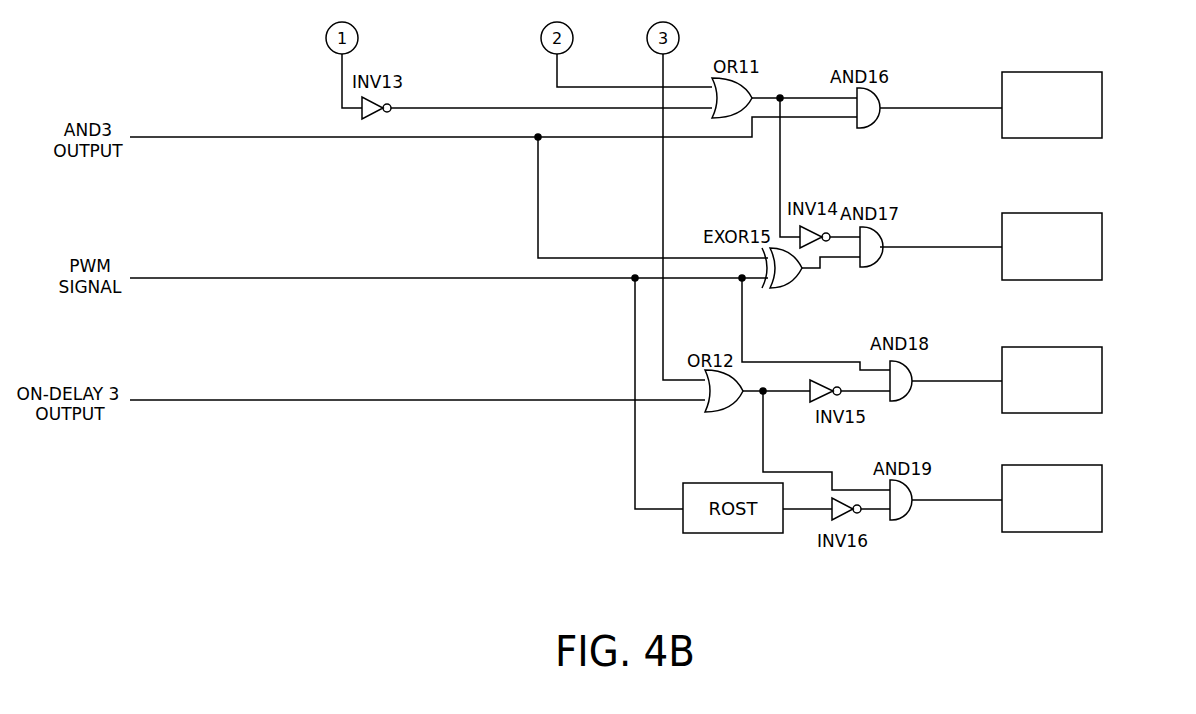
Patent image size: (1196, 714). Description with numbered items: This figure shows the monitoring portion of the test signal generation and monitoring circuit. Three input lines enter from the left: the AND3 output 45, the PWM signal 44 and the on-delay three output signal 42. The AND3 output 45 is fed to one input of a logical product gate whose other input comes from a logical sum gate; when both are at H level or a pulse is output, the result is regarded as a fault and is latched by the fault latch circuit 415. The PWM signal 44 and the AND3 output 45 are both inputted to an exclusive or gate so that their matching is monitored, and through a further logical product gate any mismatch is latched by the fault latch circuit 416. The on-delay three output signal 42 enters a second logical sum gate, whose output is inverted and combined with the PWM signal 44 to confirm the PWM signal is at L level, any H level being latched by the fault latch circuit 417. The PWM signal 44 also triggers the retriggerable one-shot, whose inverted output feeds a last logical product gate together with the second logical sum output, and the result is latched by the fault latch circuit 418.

The output signal of the OND3 42 is at (417, 388).
The PWM signal 44 is at (510, 381).
The AND3 output 45 is at (493, 186).
The fault latch circuit 415 is at (1102, 103).
The fault latch circuit 416 is at (1102, 246).
The fault latch circuit 417 is at (1102, 379).
The fault latch circuit 418 is at (1102, 499).